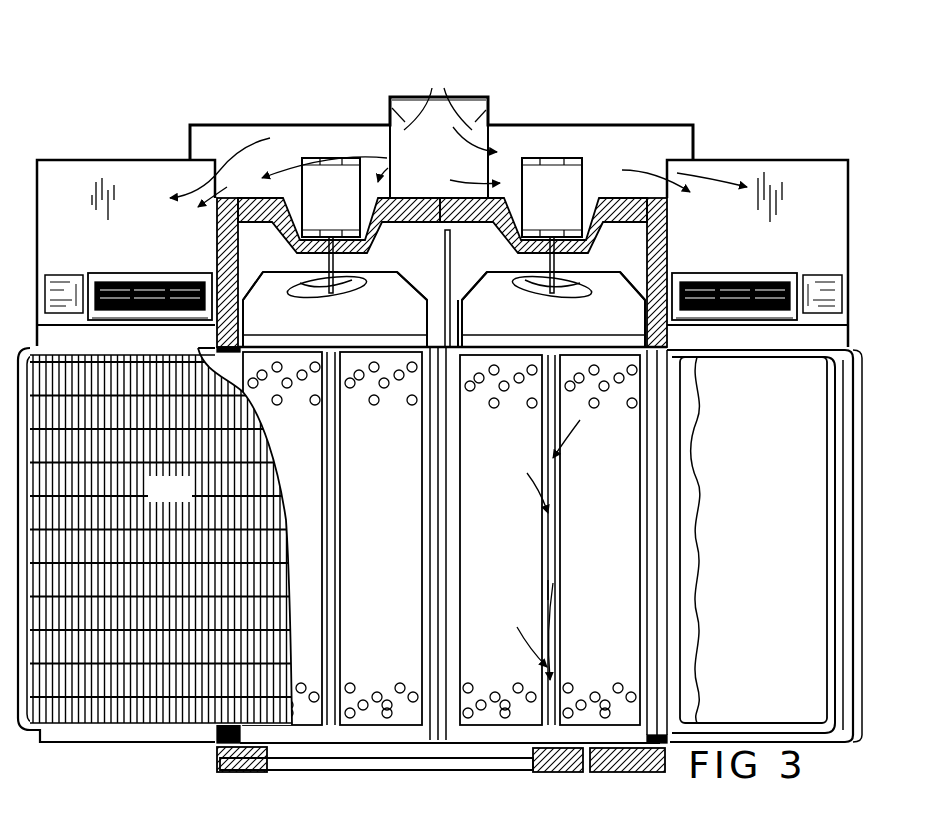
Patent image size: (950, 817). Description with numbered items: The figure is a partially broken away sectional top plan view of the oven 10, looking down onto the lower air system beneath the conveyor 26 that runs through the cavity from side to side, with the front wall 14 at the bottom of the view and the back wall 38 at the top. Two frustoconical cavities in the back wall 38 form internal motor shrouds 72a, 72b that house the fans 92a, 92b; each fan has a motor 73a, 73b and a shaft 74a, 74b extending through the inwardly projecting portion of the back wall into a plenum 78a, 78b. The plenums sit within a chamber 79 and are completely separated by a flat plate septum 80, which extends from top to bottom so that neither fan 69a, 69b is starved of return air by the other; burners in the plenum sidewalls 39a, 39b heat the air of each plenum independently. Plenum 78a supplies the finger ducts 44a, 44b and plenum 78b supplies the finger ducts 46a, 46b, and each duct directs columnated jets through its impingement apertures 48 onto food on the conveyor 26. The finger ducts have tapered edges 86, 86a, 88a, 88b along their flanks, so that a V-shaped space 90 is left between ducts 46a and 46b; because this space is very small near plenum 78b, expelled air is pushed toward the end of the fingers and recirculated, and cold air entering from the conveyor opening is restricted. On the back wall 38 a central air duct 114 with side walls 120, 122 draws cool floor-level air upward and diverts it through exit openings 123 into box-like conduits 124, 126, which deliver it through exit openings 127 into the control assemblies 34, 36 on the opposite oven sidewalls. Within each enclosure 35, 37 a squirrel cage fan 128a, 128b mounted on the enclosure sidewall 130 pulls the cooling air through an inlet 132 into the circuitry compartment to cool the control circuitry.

The oven 10 is at (398, 60).
The front wall 14 is at (418, 750).
The conveyor 26 is at (161, 535).
The control assembly 34 is at (78, 158).
The enclosure 35 is at (133, 173).
The control assembly 36 is at (752, 158).
The enclosure 37 is at (806, 178).
The back wall 38 is at (288, 125).
The sidewall 39a is at (120, 280).
The sidewall 39b is at (713, 273).
The finger duct 44a is at (282, 538).
The finger duct 44b is at (381, 538).
The finger duct 46a is at (501, 540).
The finger duct 46b is at (600, 540).
The impingement apertures 48 is at (386, 385).
The fan 69a is at (360, 158).
The fan 69b is at (540, 157).
The motor shroud 72a is at (261, 275).
The motor shroud 72b is at (487, 296).
The motor 73a is at (315, 176).
The motor 73b is at (592, 190).
The shaft 74a is at (407, 274).
The shaft 74b is at (622, 274).
The plenum 78a is at (335, 309).
The plenum 78b is at (553, 309).
The chamber 79 is at (452, 288).
The septum 80 is at (452, 246).
The left air passage 86 is at (345, 636).
The tapered edge 86a is at (325, 657).
The tapered edge 88a is at (543, 632).
The tapered edge 88b is at (560, 622).
The V-shaped space 90 is at (557, 598).
The fan 92a is at (357, 300).
The fan 92b is at (583, 300).
The central air duct 114 is at (478, 92).
The side wall 120 is at (392, 108).
The side wall 122 is at (490, 112).
The exit openings 123 is at (438, 96).
The conduit 124 is at (220, 145).
The conduit 126 is at (620, 147).
The exit opening 127 is at (250, 196).
The squirrel cage fan 128a is at (110, 283).
The squirrel cage fan 128b is at (778, 282).
The sidewall 130 is at (813, 350).
The inlet 132 is at (757, 348).